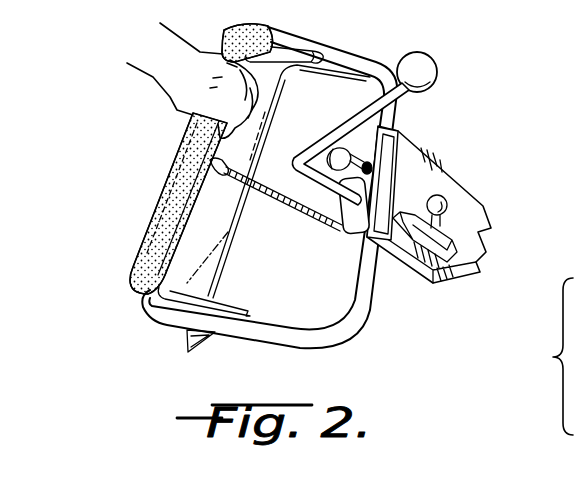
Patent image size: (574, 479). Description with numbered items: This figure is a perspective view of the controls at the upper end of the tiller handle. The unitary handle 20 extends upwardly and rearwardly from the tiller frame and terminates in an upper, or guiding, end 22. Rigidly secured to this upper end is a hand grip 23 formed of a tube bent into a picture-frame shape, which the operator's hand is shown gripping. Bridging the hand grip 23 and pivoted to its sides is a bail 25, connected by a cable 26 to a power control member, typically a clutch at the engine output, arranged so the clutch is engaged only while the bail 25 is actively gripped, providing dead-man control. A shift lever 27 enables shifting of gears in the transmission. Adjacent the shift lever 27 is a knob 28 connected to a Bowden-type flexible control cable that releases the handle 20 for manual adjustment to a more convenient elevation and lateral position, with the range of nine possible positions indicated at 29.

The handle 20 is at (462, 144).
The upper end of handle 22 is at (480, 207).
The hand grip 23 is at (162, 318).
The bail 25 is at (200, 216).
The cable 26 is at (311, 214).
The shift lever 27 is at (433, 58).
The knob 28 is at (333, 148).
The possible positions 29 is at (539, 356).